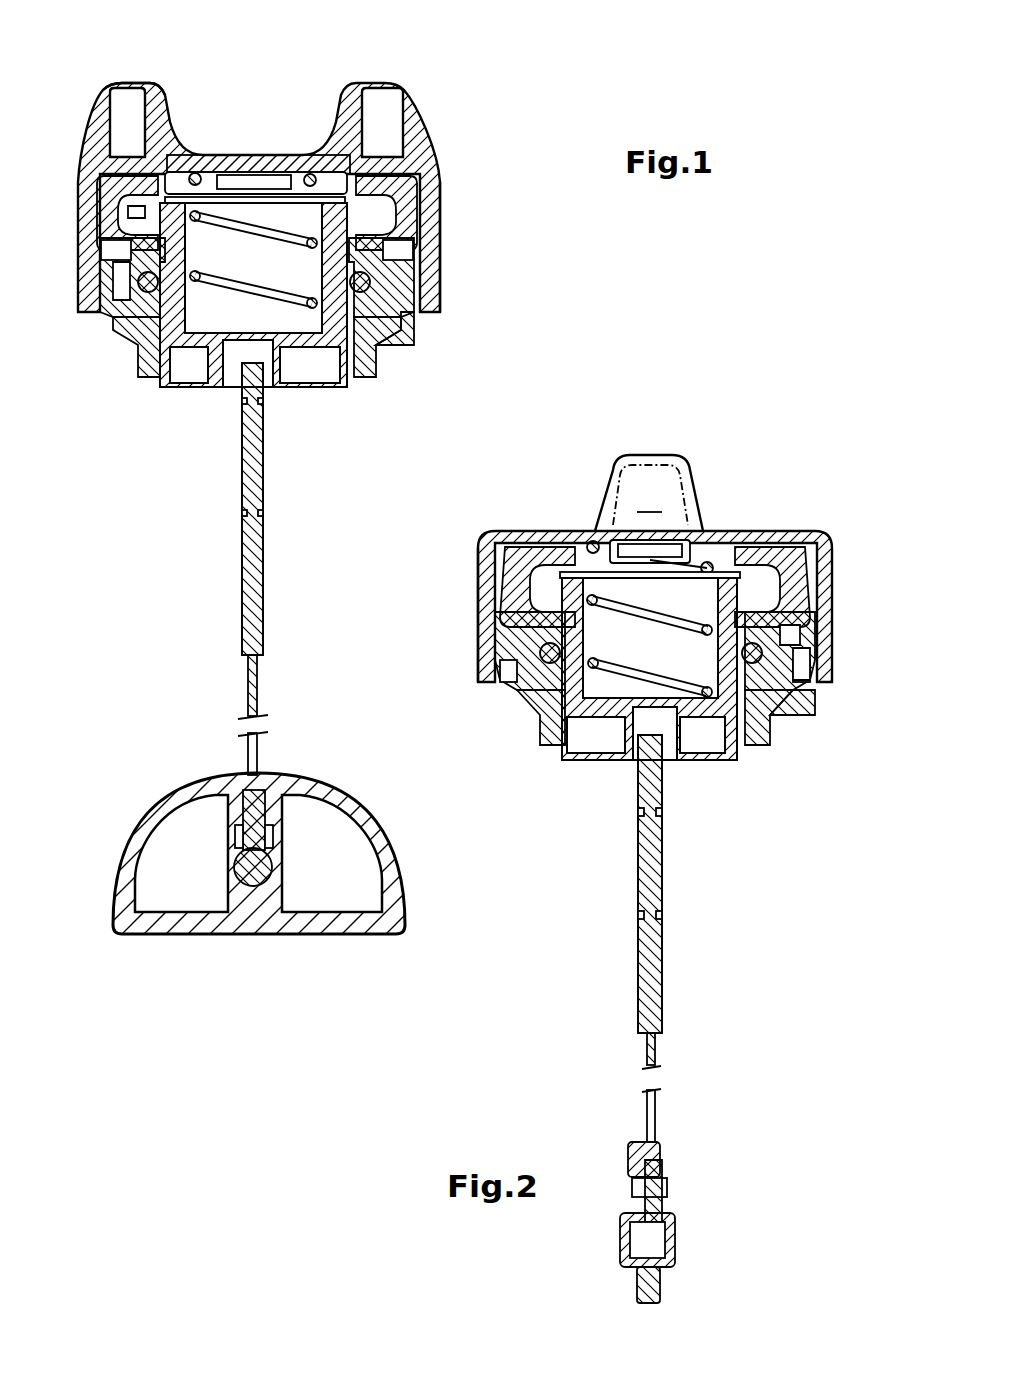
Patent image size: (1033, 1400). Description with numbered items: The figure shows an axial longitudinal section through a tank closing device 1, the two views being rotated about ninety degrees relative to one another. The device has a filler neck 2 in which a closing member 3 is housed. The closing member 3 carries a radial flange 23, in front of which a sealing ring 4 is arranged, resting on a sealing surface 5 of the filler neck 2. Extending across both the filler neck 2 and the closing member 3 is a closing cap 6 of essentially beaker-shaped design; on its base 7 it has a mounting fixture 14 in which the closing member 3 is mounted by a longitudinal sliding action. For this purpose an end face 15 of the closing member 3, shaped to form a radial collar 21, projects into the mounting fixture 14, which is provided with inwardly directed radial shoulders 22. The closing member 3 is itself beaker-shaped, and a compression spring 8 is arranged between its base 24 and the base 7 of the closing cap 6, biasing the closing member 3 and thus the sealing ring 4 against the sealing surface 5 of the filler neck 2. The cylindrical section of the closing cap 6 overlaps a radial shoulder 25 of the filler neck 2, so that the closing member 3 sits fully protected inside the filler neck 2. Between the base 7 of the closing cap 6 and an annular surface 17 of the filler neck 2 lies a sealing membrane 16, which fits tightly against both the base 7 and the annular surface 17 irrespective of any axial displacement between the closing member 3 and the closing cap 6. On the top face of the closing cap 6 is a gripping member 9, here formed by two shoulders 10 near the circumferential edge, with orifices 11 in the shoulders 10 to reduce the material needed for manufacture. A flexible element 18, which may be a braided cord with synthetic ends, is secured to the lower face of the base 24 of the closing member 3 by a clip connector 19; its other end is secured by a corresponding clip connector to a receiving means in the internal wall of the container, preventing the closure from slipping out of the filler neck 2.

In FIG. 1, the tank closing device 1 is at (402, 382).
In FIG. 2, the tank closing device 1 is at (833, 520).
In FIG. 1, the filler neck 2 is at (133, 312).
In FIG. 2, the filler neck 2 is at (775, 705).
In FIG. 1, the closing member 3 is at (143, 347).
In FIG. 2, the closing member 3 is at (545, 710).
In FIG. 1, the sealing ring 4 is at (412, 270).
In FIG. 2, the sealing ring 4 is at (512, 684).
In FIG. 1, the sealing surface 5 is at (405, 314).
In FIG. 2, the sealing surface 5 is at (790, 690).
In FIG. 1, the closing cap 6 is at (455, 226).
In FIG. 2, the closing cap 6 is at (474, 594).
In FIG. 1, the base 7 is at (217, 163).
In FIG. 1, the compression spring 8 is at (273, 232).
In FIG. 2, the compression spring 8 is at (690, 688).
In FIG. 1, the gripping member 9 is at (442, 128).
In FIG. 2, the gripping member 9 is at (708, 470).
In FIG. 1, the shoulders 10 is at (96, 137).
In FIG. 2, the shoulders 10 is at (650, 456).
In FIG. 1, the orifices 11 is at (125, 100).
In FIG. 1, the mounting fixture 14 is at (158, 197).
In FIG. 2, the mounting fixture 14 is at (775, 592).
In FIG. 1, the end face 15 is at (337, 206).
In FIG. 2, the end face 15 is at (720, 593).
In FIG. 1, the sealing membrane 16 is at (420, 182).
In FIG. 2, the sealing membrane 16 is at (511, 570).
In FIG. 2, the annular surface 17 is at (803, 640).
In FIG. 1, the flexible element 18 is at (248, 682).
In FIG. 2, the flexible element 18 is at (660, 1052).
In FIG. 1, the clip connector 19 is at (275, 402).
In FIG. 2, the clip connector 19 is at (673, 778).
In FIG. 2, the radial collar 21 is at (567, 573).
In FIG. 1, the radial shoulders 22 is at (138, 217).
In FIG. 1, the radial flange 23 is at (120, 260).
In FIG. 2, the radial flange 23 is at (793, 660).
In FIG. 1, the base 24 is at (188, 340).
In FIG. 2, the base 24 is at (605, 748).
In FIG. 2, the radial shoulder 25 is at (505, 640).